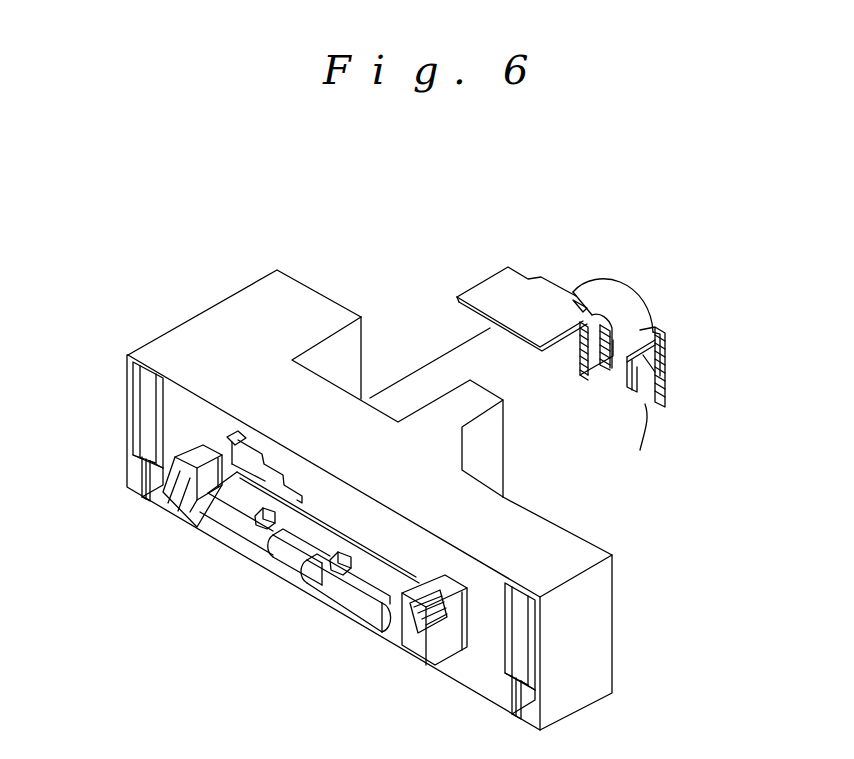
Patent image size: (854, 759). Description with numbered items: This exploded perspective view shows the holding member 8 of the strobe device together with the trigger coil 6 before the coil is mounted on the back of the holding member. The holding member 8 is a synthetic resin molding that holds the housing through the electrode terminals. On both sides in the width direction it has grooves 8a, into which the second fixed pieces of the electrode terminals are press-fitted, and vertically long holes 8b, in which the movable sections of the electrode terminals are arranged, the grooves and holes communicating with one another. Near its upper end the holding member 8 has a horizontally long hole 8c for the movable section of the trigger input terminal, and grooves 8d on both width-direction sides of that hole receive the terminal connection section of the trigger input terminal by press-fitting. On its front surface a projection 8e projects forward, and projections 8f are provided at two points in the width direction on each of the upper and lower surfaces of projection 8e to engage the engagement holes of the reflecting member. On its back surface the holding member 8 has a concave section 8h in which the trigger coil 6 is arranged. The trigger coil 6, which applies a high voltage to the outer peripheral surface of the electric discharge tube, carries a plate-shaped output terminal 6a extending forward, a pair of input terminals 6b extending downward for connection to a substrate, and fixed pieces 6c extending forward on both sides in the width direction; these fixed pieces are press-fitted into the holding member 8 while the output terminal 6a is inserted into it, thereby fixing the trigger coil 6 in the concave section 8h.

The holding member 8 is at (245, 311).
The grooves 8a is at (138, 487).
The vertically long holes 8b is at (153, 392).
The horizontally long hole 8c is at (262, 468).
The grooves 8d is at (232, 434).
The projection 8e is at (363, 615).
The projections 8f is at (327, 573).
The concave section 8h is at (358, 353).
The trigger coil 6 is at (631, 291).
The output terminal 6a is at (496, 301).
The input terminals 6b is at (626, 397).
The fixed pieces 6c is at (657, 353).